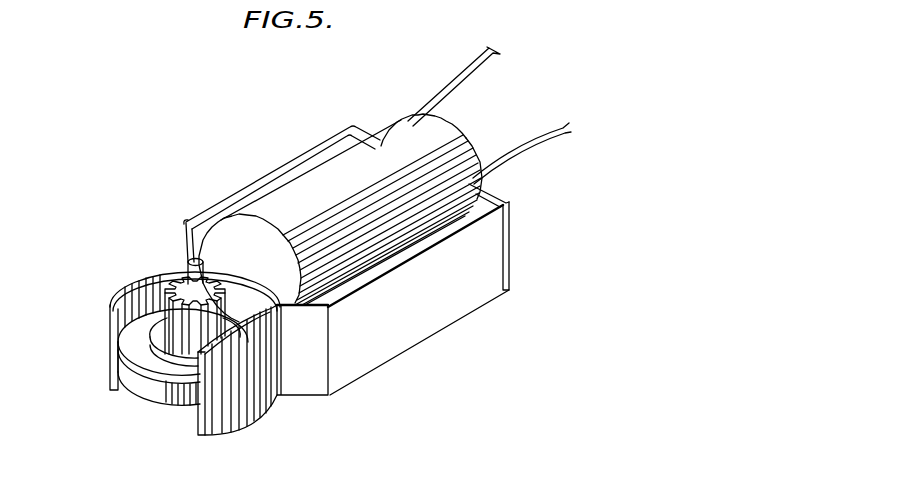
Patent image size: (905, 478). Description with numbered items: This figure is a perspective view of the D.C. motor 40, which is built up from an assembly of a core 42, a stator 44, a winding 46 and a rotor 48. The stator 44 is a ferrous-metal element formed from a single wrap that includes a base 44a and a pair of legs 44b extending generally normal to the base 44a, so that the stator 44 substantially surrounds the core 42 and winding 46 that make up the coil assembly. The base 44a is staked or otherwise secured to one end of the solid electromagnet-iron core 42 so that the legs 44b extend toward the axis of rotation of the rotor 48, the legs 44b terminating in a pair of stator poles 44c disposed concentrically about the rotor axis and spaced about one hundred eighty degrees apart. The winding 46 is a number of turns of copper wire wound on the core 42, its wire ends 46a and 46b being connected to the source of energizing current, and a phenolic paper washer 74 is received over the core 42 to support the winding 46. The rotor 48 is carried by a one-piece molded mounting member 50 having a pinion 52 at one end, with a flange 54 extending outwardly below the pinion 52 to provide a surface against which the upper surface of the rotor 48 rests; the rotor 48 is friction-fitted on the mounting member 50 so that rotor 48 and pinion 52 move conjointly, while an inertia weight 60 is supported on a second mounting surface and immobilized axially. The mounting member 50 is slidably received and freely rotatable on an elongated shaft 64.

The D.C. motor 40 is at (229, 173).
The core 42 is at (243, 289).
The stator 44 is at (400, 323).
The base 44a is at (493, 194).
The legs 44b is at (217, 203).
The stator poles 44c is at (108, 351).
The winding 46 is at (389, 151).
The wire end 46a is at (474, 77).
The wire end 46b is at (566, 127).
The rotor 48 is at (142, 363).
The mounting member 50 is at (160, 320).
The pinion 52 is at (177, 285).
The flange 54 is at (170, 358).
The inertia weight 60 is at (147, 397).
The shaft 64 is at (187, 279).
The washer 74 is at (261, 253).